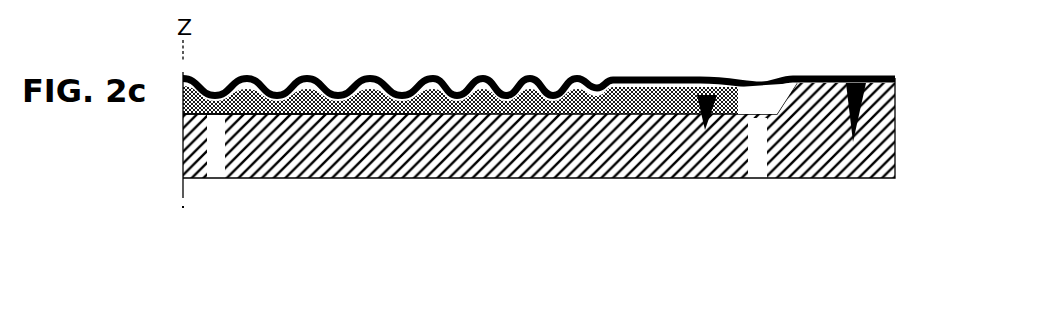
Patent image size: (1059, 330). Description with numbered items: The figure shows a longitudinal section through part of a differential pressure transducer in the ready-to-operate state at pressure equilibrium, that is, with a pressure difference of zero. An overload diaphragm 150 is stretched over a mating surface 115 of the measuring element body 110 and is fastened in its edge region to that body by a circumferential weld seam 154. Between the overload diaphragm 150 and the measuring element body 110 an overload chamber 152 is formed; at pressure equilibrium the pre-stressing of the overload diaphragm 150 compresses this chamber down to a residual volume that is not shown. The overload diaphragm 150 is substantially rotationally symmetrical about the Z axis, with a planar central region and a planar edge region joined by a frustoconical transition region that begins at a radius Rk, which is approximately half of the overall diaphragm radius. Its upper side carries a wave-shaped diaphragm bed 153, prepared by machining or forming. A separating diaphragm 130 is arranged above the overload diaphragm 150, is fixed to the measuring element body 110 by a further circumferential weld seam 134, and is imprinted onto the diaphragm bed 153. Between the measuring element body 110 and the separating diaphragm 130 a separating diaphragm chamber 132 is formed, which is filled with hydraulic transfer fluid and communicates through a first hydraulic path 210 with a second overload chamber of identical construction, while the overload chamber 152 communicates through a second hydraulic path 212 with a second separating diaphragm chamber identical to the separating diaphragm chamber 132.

The measuring element body 110 is at (477, 178).
The mating surface 115 is at (305, 114).
The separating diaphragm 130 is at (600, 80).
The separating diaphragm chamber 132 is at (767, 103).
The circumferential weld seam 134 is at (853, 140).
The overload diaphragm 150 is at (345, 114).
The overload chamber 152 is at (553, 116).
The diaphragm bed 153 is at (457, 93).
The circumferential weld seam 154 is at (704, 131).
The first hydraulic path 210 is at (757, 178).
The second hydraulic path 212 is at (217, 178).
The radius Rk is at (433, 116).